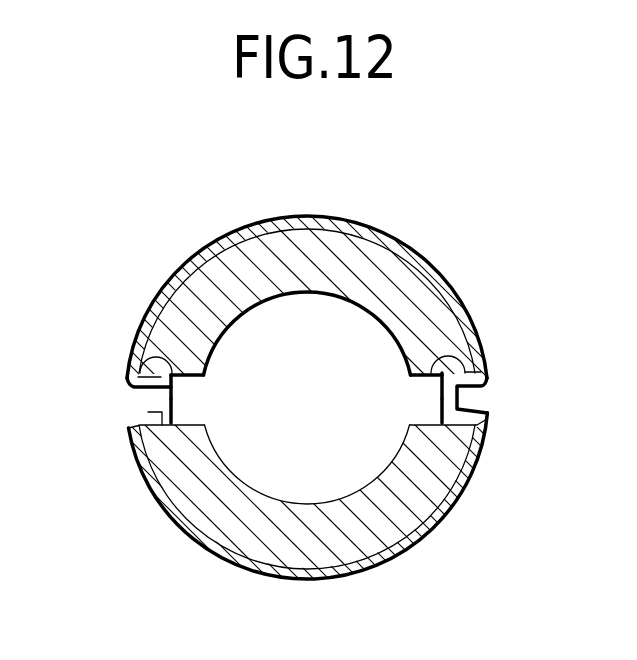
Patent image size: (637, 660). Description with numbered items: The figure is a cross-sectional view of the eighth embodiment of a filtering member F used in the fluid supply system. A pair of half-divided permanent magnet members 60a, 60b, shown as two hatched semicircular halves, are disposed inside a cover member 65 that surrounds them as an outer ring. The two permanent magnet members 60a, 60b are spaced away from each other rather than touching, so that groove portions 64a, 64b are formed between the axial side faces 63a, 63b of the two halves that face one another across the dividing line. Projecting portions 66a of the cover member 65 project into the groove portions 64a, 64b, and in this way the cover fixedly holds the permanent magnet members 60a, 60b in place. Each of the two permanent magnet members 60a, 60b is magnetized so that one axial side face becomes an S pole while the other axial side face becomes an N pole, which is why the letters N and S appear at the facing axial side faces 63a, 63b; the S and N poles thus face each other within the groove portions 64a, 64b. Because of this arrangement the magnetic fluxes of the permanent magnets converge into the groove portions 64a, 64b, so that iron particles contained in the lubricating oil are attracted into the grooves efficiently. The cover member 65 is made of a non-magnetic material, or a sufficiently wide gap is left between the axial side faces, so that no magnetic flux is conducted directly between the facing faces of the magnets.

The filtering member F is at (444, 134).
The cover member 65 is at (348, 212).
The half-divided permanent magnet member 60a is at (385, 257).
The half-divided permanent magnet member 60b is at (337, 553).
The axial side face 63a is at (200, 379).
The axial side face 63b is at (198, 419).
The groove portion 64a is at (140, 350).
The groove portion 64b is at (470, 358).
The projecting portion 66a is at (150, 397).